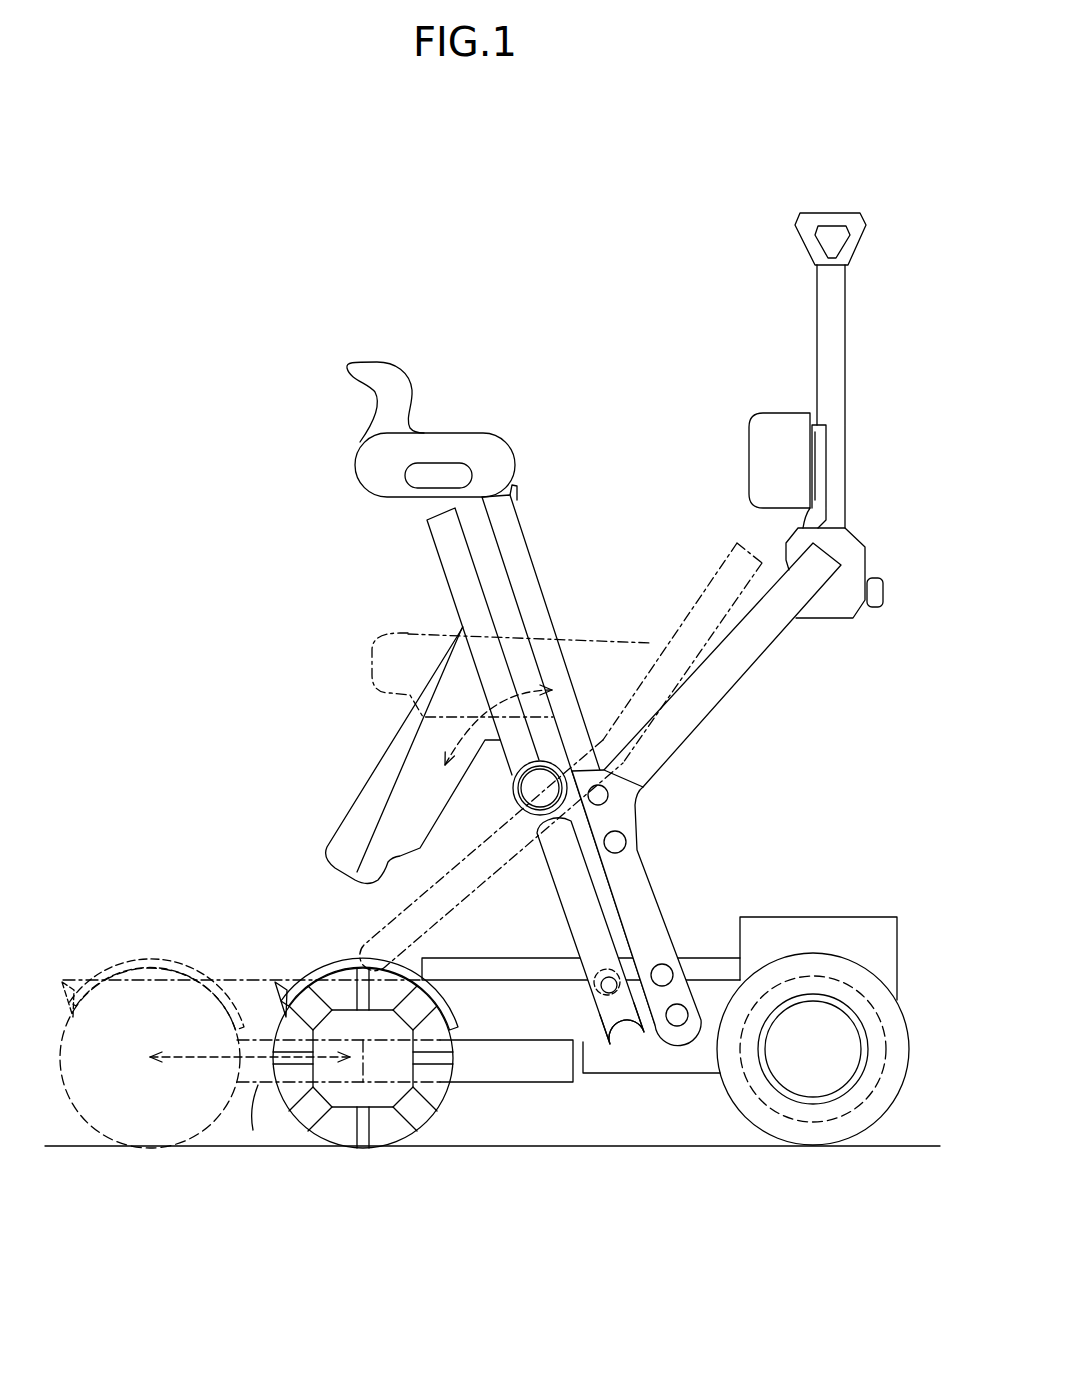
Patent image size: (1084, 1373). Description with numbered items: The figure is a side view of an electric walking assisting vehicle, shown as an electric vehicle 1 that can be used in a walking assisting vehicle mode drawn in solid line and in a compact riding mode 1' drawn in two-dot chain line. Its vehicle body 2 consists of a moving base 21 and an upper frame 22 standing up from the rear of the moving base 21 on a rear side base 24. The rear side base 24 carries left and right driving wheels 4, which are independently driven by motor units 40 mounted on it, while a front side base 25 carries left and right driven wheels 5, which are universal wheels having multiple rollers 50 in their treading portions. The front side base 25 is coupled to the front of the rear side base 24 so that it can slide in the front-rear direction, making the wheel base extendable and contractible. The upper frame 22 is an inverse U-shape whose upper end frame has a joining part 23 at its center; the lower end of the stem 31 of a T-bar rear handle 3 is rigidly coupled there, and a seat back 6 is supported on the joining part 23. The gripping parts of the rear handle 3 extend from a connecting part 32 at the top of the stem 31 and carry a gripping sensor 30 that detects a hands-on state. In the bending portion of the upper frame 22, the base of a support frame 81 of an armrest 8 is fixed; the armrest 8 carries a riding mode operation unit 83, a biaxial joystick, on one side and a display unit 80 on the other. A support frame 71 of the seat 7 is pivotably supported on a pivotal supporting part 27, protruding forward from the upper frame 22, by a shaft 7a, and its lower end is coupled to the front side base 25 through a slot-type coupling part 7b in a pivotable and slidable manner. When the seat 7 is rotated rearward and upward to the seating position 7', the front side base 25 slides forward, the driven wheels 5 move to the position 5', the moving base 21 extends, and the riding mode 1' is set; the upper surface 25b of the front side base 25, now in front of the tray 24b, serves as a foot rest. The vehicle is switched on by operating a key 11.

The electric vehicle 1 is at (507, 681).
The riding mode 1' is at (411, 870).
The vehicle body 2 is at (714, 740).
The rear handle 3 is at (878, 206).
The driving wheels 4 is at (880, 1117).
The driven wheels 5 is at (342, 1047).
The driven wheels in riding mode position 5' is at (152, 1087).
The seat back 6 is at (760, 430).
The seat 7 is at (394, 755).
The seating position 7' is at (512, 621).
The shaft 7a is at (548, 790).
The coupling part 7b is at (597, 1042).
The armrest 8 is at (466, 427).
The key 11 is at (885, 592).
The moving base 21 is at (536, 1088).
The upper frame 22 is at (645, 842).
The joining part 23 is at (868, 556).
The rear side base 24 is at (625, 1075).
The tray 24b is at (712, 958).
The front side base 25 is at (258, 1085).
The upper surface 25b is at (243, 980).
The pivotal supporting part 27 is at (536, 818).
The gripping sensor 30 is at (833, 227).
The stem 31 is at (848, 298).
The connecting part 32 is at (821, 214).
The motor units 40 is at (753, 1100).
The rollers 50 is at (303, 1118).
The support frame 71 is at (563, 916).
The display unit 80 is at (403, 358).
The support frame 81 is at (541, 580).
The riding mode operation unit 83 is at (405, 355).